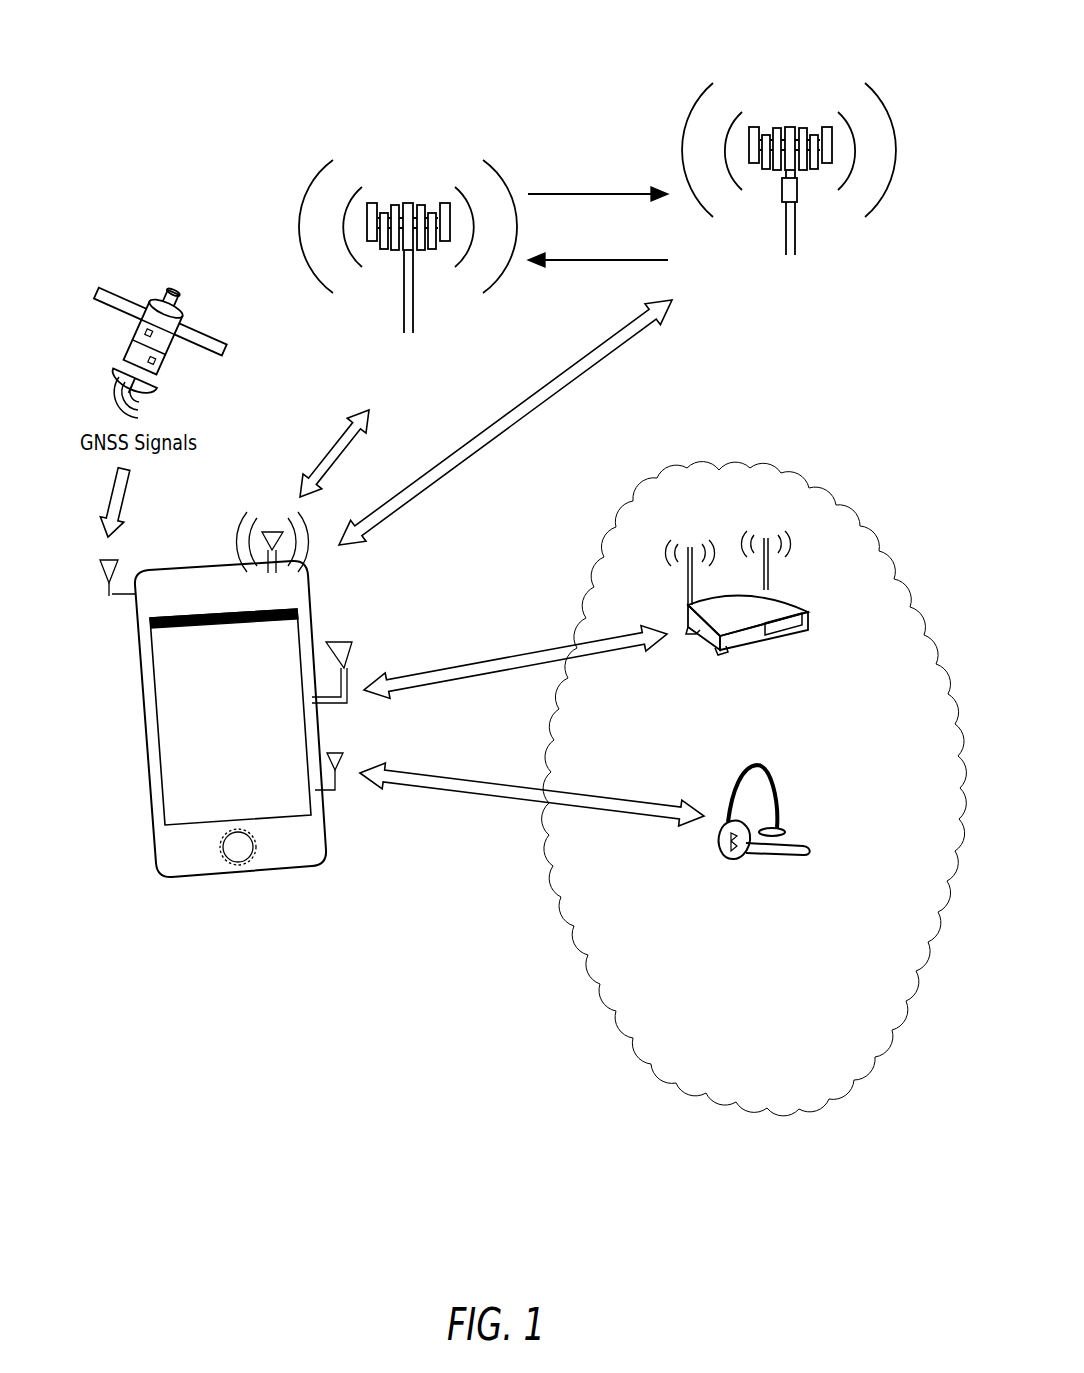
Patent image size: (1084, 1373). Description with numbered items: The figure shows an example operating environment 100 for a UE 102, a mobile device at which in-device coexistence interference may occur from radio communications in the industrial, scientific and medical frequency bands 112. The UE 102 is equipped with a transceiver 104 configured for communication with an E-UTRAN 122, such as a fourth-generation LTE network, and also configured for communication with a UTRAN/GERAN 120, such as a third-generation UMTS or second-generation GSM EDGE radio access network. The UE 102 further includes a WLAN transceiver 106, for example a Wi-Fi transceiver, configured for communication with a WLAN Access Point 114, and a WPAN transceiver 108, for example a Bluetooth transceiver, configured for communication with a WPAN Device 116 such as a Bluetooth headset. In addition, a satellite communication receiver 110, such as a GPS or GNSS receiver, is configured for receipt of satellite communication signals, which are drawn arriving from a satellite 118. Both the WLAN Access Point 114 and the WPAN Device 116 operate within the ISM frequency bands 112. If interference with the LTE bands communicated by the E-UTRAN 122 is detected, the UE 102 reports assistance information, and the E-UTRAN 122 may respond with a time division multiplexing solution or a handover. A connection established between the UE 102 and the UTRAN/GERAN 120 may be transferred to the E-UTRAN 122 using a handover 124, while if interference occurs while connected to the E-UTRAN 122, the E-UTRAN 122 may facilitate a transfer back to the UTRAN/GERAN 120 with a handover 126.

The operating environment 100 is at (168, 50).
The UE 102 is at (155, 877).
The transceiver 104 is at (282, 568).
The Wireless Local Area Network (WLAN) transceiver 106 is at (345, 707).
The Wireless Personal Area Network (WPAN) transceiver 108 is at (338, 792).
The satellite communication receiver 110 is at (110, 596).
The industrial, scientific and medical (ISM) frequency bands 112 is at (653, 1080).
The WLAN Access Point 114 is at (787, 595).
The WPAN Device 116 is at (780, 791).
The GNSS satellite 118 is at (127, 307).
The UTRAN/GERAN 120 is at (414, 270).
The E-UTRAN 122 is at (797, 195).
The handover 124 is at (598, 194).
The handover 126 is at (598, 259).